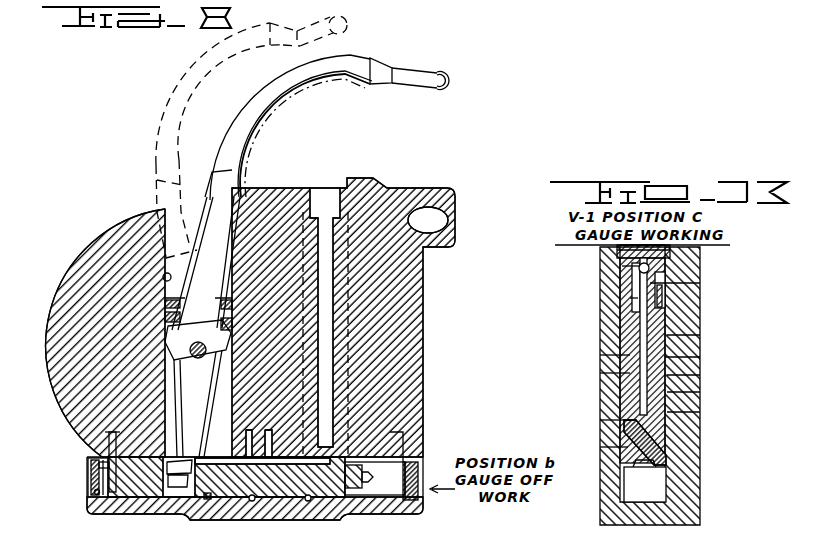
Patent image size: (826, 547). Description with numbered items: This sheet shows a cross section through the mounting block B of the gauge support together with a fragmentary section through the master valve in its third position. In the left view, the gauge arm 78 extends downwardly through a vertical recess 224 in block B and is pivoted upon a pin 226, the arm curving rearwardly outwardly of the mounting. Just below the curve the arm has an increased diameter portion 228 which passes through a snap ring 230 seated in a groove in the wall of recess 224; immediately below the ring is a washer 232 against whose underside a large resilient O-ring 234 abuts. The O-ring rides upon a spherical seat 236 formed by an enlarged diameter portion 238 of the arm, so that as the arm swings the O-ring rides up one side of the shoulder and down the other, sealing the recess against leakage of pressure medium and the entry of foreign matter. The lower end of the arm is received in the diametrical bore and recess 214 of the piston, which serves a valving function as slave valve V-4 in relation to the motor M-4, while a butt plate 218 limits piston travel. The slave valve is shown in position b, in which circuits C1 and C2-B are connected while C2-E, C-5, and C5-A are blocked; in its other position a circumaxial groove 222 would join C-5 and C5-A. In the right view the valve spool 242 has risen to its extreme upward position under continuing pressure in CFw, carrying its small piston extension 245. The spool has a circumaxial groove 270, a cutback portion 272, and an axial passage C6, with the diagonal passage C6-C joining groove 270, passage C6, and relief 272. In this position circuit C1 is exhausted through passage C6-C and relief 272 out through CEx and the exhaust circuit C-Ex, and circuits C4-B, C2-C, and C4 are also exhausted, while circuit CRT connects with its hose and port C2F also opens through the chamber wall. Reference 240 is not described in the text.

In FIG. 8, the arm 78 is at (292, 94).
In FIG. 8, the increased diameter portion 228 is at (234, 197).
In FIG. 8, the vertical recess 224 is at (165, 274).
In FIG. 8, the snap ring 230 is at (167, 303).
In FIG. 8, the washer 232 is at (170, 316).
In FIG. 8, the O-ring 234 is at (185, 334).
In FIG. 8, the spherical seat 236 is at (188, 362).
In FIG. 8, the pin 226 is at (182, 432).
In FIG. 8, the enlarged diameter portion 238 is at (112, 444).
In FIG. 8, the washer 240 is at (97, 460).
In FIG. 8, the slave valve V-4 is at (103, 503).
In FIG. 8, the diametrical bore and recess 214 is at (185, 500).
In FIG. 8, the circumaxial groove 222 is at (207, 500).
In FIG. 8, the circuit C5 C-5 is at (251, 501).
In FIG. 13, the circuit C5 C-5 is at (622, 266).
In FIG. 8, the circuit C2-B is at (308, 501).
In FIG. 8, the circuit C2-E is at (326, 500).
In FIG. 8, the motor M-4 is at (375, 490).
In FIG. 8, the mounting block B is at (415, 362).
In FIG. 8, the circuit C5-A is at (249, 440).
In FIG. 8, the circuit C1 is at (268, 440).
In FIG. 13, the circuit C1 is at (628, 447).
In FIG. 8, the butt plate 218 is at (425, 466).
In FIG. 13, the piston extension 245 is at (637, 298).
In FIG. 13, the valve piston 242 is at (625, 327).
In FIG. 13, the circuit C2-C is at (627, 355).
In FIG. 13, the circuit C4-B is at (630, 373).
In FIG. 13, the circumaxially cutback portion 272 is at (640, 392).
In FIG. 13, the diagonal passage C6-C is at (630, 420).
In FIG. 13, the exhaust circuit CEx is at (687, 283).
In FIG. 13, the circuit CRt CRT is at (665, 305).
In FIG. 13, the port C2F is at (690, 335).
In FIG. 13, the circuit C4 is at (683, 375).
In FIG. 13, the axial passage C6 is at (673, 392).
In FIG. 13, the exhaust circuit C-Ex is at (667, 412).
In FIG. 13, the circumaxial groove 270 is at (660, 448).
In FIG. 13, the circuit CFw is at (668, 499).